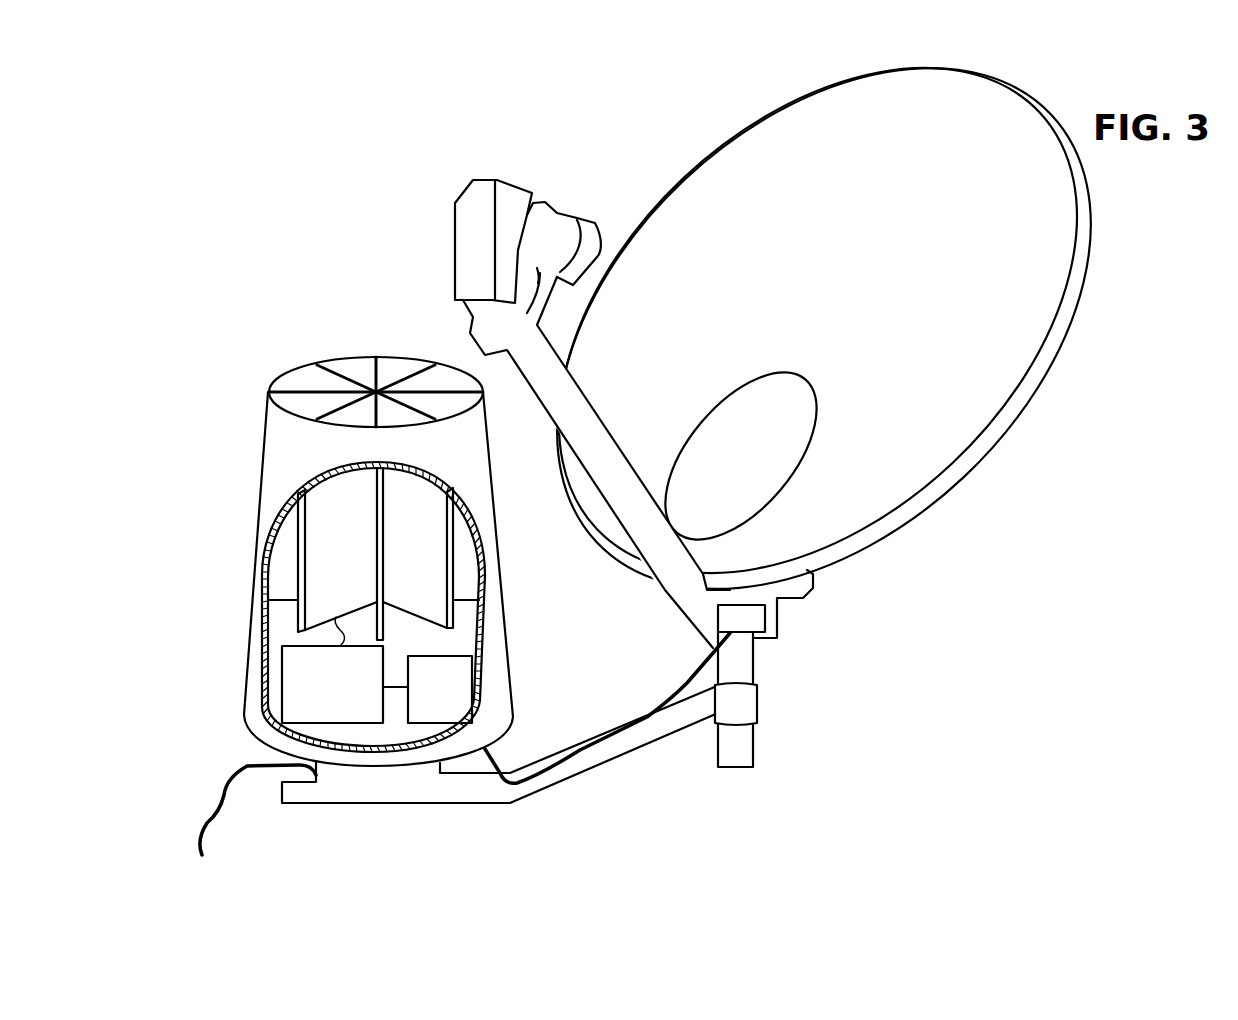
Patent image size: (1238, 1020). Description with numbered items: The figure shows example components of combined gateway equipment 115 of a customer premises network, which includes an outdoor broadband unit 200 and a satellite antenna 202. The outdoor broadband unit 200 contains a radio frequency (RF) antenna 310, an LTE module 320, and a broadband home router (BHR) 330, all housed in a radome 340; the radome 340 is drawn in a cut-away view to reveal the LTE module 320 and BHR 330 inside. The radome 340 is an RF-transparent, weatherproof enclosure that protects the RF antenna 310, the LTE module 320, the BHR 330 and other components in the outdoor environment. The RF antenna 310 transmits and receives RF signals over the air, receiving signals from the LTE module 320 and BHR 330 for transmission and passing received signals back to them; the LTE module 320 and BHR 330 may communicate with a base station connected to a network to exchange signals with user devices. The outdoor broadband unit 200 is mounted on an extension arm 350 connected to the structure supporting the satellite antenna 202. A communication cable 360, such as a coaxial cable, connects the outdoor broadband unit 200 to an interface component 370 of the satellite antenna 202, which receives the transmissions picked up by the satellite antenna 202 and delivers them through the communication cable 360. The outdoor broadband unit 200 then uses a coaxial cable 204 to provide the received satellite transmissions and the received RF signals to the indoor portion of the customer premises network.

The combined gateway equipment 115 is at (226, 78).
The outdoor broadband unit 200 is at (238, 316).
The satellite antenna 202 is at (936, 500).
The coaxial cable 204 is at (225, 802).
The RF antenna 310 is at (287, 580).
The LTE module 320 is at (348, 719).
The broadband home router (BHR) 330 is at (460, 709).
The radome 340 is at (296, 447).
The extension arm 350 is at (645, 738).
The communication cable 360 is at (678, 697).
The interface component 370 is at (758, 620).